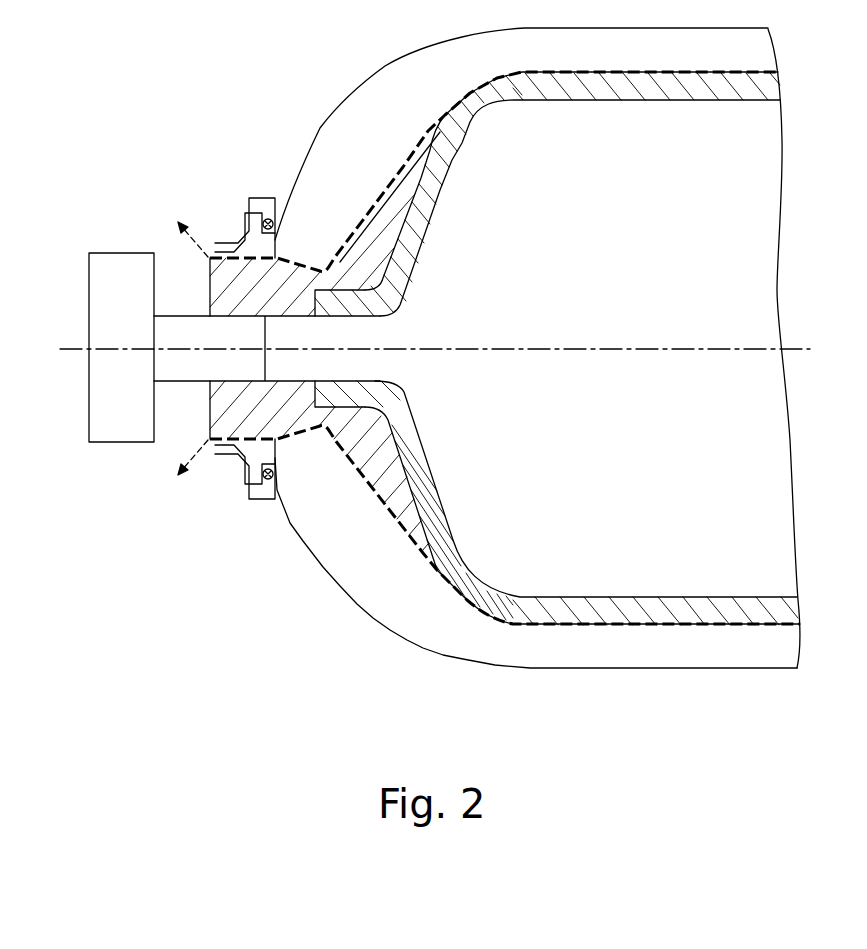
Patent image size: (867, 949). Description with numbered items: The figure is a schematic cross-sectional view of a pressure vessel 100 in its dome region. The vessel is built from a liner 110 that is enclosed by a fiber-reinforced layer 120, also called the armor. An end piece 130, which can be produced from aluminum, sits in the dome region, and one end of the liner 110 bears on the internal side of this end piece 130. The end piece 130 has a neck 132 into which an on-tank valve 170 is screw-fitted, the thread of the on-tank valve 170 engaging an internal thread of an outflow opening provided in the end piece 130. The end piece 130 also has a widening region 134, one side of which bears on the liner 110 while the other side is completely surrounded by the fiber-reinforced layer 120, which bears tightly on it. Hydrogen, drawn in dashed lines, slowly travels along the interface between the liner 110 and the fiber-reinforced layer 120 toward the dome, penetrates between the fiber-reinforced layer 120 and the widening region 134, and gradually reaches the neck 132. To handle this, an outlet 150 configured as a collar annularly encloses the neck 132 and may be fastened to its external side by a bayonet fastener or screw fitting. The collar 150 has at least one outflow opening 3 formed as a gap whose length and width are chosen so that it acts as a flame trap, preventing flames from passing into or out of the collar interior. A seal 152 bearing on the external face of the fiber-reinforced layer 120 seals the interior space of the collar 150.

The pressure vessel 100 is at (642, 200).
The liner 110 is at (728, 610).
The fiber-reinforced layer 120 is at (578, 627).
The end piece 130 is at (158, 90).
The neck 132 is at (212, 287).
The widening region 134 is at (380, 228).
The outlet 150 is at (197, 476).
The seal 152 is at (263, 481).
The on-tank valve 170 is at (110, 312).
The outflow opening 3 is at (200, 441).